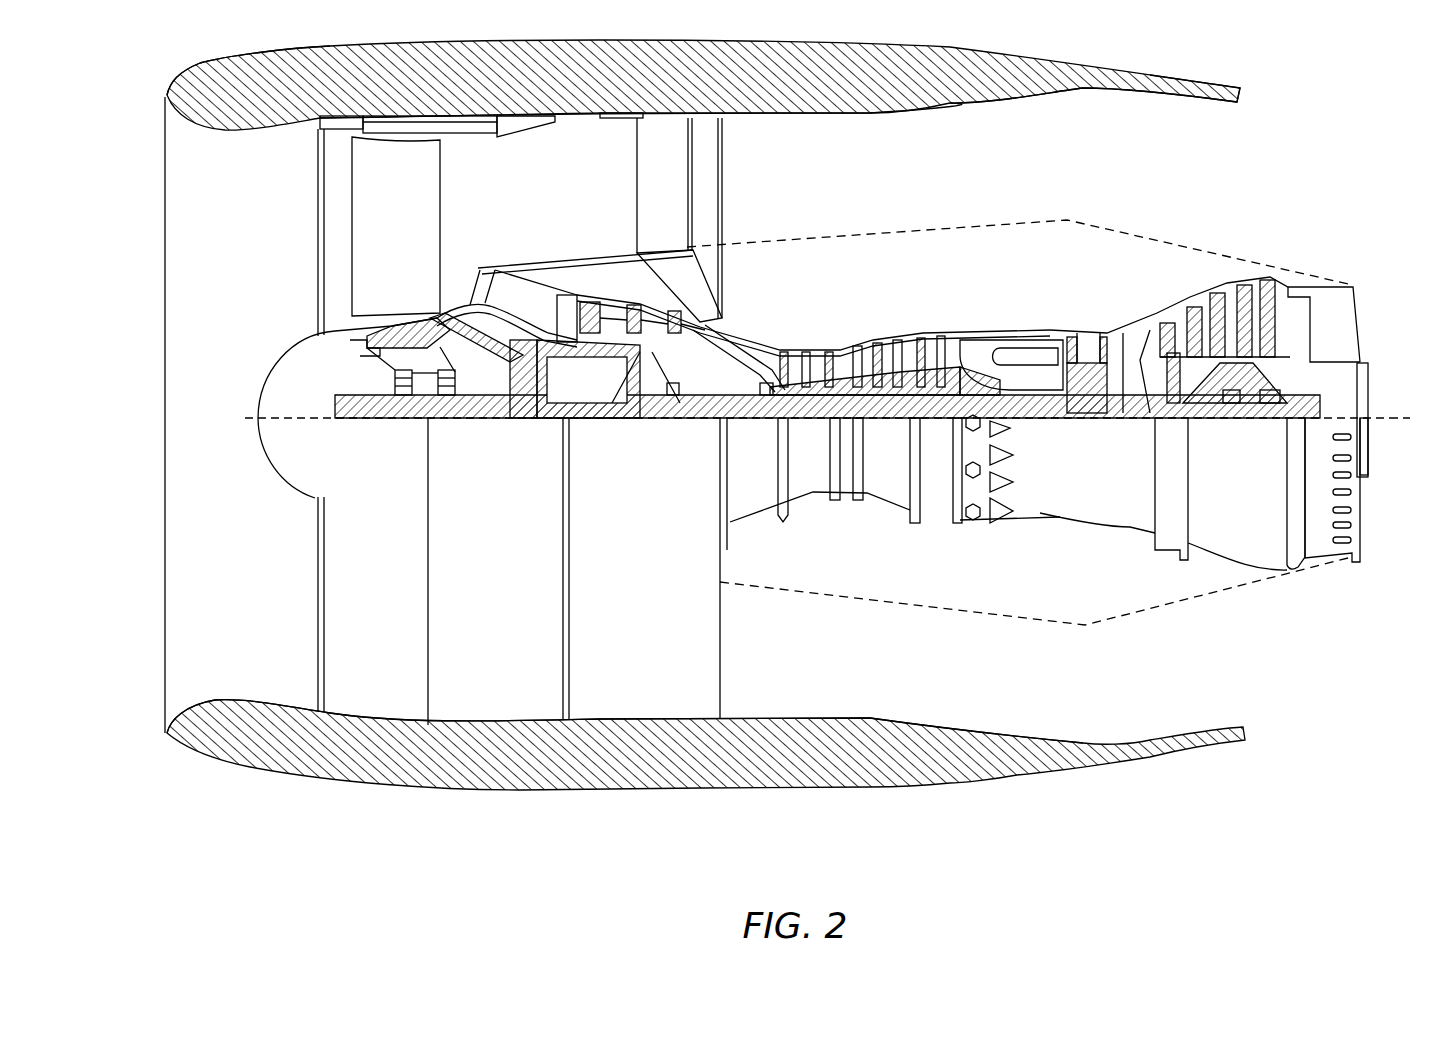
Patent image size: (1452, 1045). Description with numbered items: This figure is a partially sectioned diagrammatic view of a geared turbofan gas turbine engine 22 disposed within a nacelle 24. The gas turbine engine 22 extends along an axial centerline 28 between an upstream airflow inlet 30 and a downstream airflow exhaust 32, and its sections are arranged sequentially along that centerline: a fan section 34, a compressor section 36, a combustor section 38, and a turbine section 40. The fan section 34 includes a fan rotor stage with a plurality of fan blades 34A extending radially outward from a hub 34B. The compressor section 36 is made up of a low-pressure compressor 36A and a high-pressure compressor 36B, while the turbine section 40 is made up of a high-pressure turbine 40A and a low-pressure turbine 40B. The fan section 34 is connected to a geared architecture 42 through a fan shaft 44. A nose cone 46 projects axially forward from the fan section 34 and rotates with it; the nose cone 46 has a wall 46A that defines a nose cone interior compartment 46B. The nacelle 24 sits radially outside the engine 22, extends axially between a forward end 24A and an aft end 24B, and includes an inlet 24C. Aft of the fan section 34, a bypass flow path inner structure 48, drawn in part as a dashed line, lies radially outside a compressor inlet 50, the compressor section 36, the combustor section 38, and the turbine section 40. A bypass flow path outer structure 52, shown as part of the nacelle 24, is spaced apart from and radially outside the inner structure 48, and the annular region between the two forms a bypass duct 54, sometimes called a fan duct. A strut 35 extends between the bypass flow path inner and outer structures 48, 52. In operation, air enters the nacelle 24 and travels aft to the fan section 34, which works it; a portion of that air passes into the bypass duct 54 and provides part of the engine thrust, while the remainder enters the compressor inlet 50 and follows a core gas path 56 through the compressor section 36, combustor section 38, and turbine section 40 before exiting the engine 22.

The gas turbine engine 22 is at (1350, 145).
The nacelle 24 is at (537, 805).
The forward end 24A is at (168, 97).
The aft end 24B is at (1245, 101).
The inlet 24C is at (166, 658).
The axial centerline 28 is at (1398, 418).
The upstream airflow inlet 30 is at (104, 392).
The downstream airflow exhaust 32 is at (1384, 339).
The fan section 34 is at (386, 245).
The fan blades 34A is at (372, 196).
The hub 34B is at (373, 327).
The strut 35 is at (652, 181).
The compressor section 36 is at (790, 279).
The low-pressure compressor 36A is at (628, 298).
The high-pressure compressor 36B is at (865, 339).
The combustor section 38 is at (1018, 318).
The turbine section 40 is at (1202, 311).
The high-pressure turbine 40A is at (1073, 330).
The low-pressure turbine 40B is at (1269, 313).
The geared architecture 42 is at (528, 407).
The fan shaft 44 is at (387, 407).
The nose cone 46 is at (314, 515).
The wall 46A is at (274, 372).
The nose cone interior compartment 46B is at (278, 400).
The bypass flow path inner structure 48 is at (967, 226).
The compressor inlet 50 is at (462, 285).
The bypass flow path outer structure 52 is at (1023, 93).
The bypass duct 54 is at (1000, 176).
The core gas path 56 is at (750, 350).